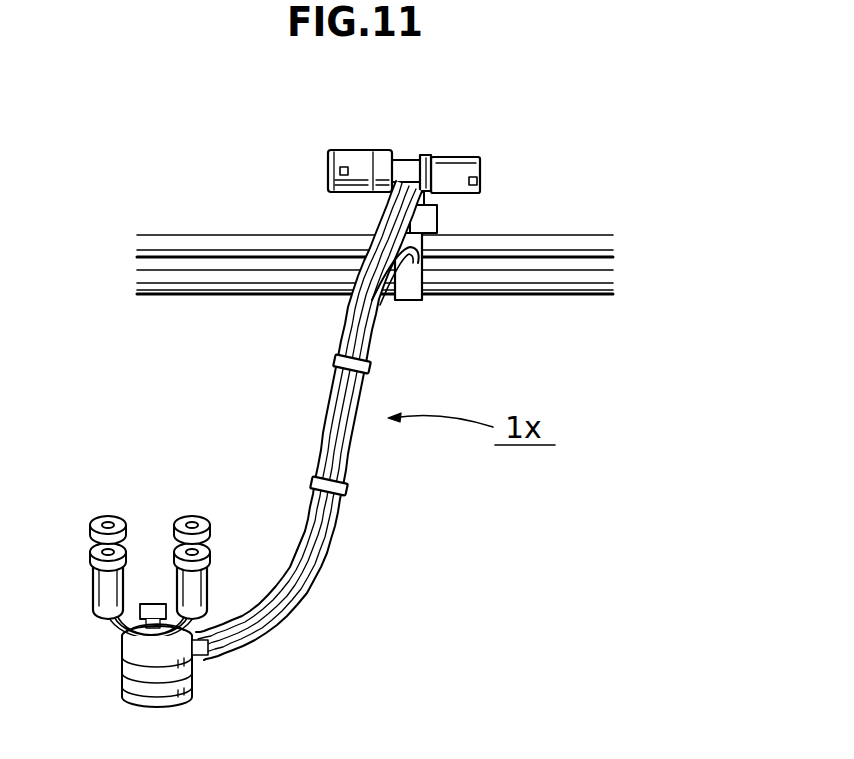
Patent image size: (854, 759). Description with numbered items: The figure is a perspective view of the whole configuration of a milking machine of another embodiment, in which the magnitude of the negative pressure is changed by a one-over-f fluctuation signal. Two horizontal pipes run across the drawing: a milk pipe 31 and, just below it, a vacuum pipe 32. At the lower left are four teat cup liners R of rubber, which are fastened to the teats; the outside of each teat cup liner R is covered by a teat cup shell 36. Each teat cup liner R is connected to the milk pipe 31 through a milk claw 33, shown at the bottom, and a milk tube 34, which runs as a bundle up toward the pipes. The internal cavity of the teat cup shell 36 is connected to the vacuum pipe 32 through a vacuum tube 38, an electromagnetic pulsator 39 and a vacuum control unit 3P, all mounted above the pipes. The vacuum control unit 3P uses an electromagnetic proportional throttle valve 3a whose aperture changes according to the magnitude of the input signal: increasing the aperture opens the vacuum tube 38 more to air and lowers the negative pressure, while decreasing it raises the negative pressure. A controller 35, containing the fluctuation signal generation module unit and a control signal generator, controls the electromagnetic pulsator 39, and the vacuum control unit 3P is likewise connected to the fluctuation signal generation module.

The milk pipe 31 is at (218, 235).
The vacuum pipe 32 is at (240, 295).
The electromagnetic proportional throttle valve 3a is at (342, 150).
The vacuum control unit 3P is at (328, 172).
The electromagnetic pulsator 39 is at (407, 160).
The controller 35 is at (462, 157).
The milk tube 34 is at (323, 543).
The vacuum tube 38 is at (323, 442).
The milk claw 33 is at (195, 672).
The teat cup shell 36 is at (173, 575).
The teat cup liner R is at (95, 518).